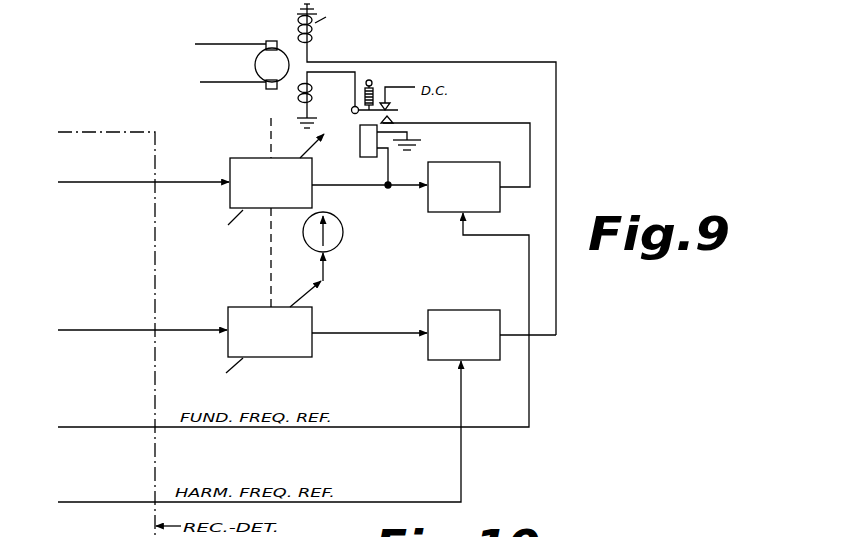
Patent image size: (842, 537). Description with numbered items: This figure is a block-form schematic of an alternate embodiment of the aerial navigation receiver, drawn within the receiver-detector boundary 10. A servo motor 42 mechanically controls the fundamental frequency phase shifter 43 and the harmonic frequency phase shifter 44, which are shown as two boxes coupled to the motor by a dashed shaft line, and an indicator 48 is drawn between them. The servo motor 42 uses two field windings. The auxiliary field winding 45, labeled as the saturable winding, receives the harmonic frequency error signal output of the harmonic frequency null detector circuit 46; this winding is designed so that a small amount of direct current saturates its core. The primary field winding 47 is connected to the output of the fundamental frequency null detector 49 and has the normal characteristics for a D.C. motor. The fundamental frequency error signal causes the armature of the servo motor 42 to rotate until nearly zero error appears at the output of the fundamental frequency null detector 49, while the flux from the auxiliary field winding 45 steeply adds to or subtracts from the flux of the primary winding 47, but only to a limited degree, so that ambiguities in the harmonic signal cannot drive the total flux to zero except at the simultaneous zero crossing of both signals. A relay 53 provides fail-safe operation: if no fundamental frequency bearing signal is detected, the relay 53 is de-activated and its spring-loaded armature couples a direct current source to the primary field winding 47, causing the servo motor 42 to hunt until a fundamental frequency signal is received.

The receiver-detector boundary 10 is at (125, 130).
The servo motor 42 is at (270, 67).
The fundamental frequency phase shifter 43 is at (250, 158).
The harmonic frequency phase shifter 44 is at (244, 307).
The auxiliary field winding 45 is at (313, 41).
The harmonic frequency null detector circuit 46 is at (469, 310).
The primary field winding 47 is at (313, 91).
The indicator 48 is at (307, 249).
The fundamental frequency null detector 49 is at (468, 163).
The relay 53 is at (359, 147).